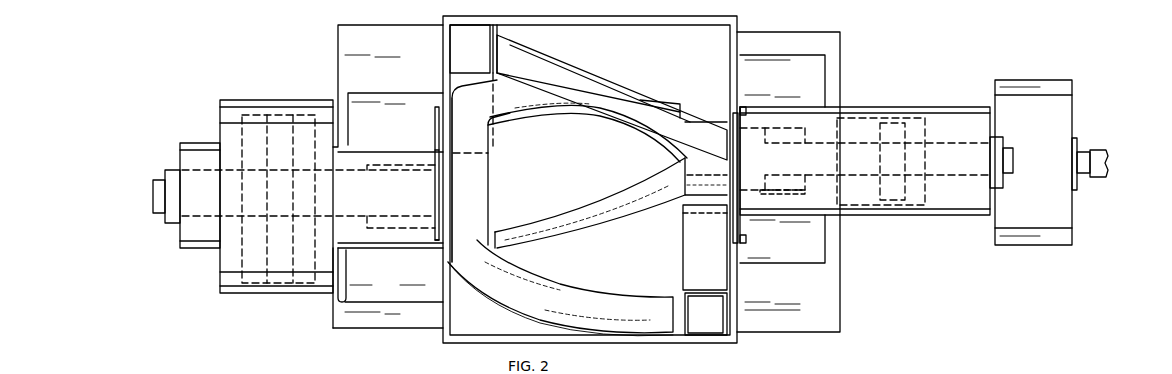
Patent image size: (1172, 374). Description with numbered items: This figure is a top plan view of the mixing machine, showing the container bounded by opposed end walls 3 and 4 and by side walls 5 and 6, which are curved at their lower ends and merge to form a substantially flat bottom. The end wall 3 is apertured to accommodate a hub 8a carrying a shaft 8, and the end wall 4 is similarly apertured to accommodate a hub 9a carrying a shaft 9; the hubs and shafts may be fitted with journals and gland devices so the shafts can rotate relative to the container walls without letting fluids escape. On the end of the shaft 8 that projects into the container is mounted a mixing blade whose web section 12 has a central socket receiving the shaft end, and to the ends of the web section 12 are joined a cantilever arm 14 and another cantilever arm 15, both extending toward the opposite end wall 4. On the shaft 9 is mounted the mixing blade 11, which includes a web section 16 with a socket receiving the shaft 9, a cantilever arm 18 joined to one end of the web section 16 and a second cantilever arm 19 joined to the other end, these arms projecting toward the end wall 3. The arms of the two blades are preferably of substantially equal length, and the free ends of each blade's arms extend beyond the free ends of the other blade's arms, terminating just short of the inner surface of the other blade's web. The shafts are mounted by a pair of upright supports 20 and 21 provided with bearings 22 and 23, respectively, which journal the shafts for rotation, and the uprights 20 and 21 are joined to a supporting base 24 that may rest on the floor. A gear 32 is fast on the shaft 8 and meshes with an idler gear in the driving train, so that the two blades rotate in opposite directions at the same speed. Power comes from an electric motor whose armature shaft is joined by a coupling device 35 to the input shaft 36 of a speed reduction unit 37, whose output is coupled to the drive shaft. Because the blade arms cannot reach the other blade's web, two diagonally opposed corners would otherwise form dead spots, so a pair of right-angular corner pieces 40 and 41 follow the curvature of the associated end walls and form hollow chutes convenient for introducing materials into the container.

The end wall 3 is at (697, 361).
The end wall 4 is at (370, 192).
The side wall 5 is at (470, 334).
The side wall 6 is at (666, 31).
The shaft 8 is at (774, 128).
The hub 8a is at (748, 108).
The shaft 9 is at (154, 192).
The hub 9a is at (437, 100).
The mixing blade 11 is at (498, 192).
The web section 12 is at (680, 164).
The cantilever arm 14 is at (567, 74).
The cantilever arm 15 is at (624, 210).
The web section 16 is at (494, 141).
The cantilever arm 18 is at (548, 105).
The cantilever arm 19 is at (567, 294).
The upright support 20 is at (813, 182).
The upright support 21 is at (350, 292).
The bearing 22 is at (772, 190).
The bearing 23 is at (386, 228).
The supporting base 24 is at (826, 312).
The gear 32 is at (927, 124).
The coupling device 35 is at (1108, 155).
The input shaft 36 is at (1084, 154).
The speed reduction unit 37 is at (1066, 119).
The corner piece 40 is at (714, 288).
The corner piece 41 is at (493, 43).